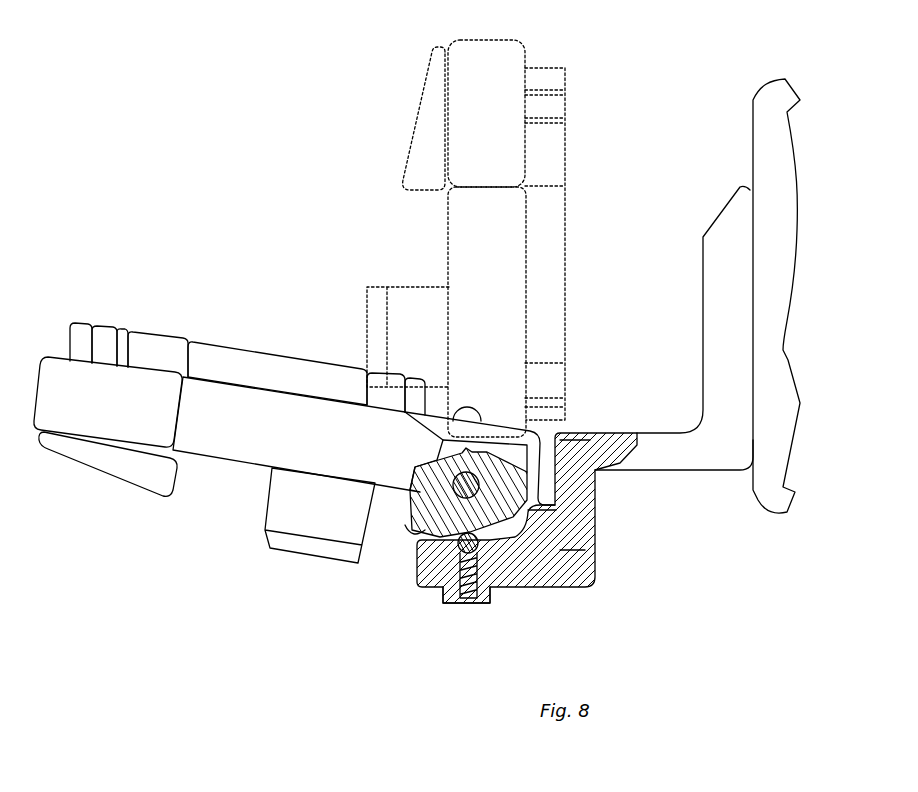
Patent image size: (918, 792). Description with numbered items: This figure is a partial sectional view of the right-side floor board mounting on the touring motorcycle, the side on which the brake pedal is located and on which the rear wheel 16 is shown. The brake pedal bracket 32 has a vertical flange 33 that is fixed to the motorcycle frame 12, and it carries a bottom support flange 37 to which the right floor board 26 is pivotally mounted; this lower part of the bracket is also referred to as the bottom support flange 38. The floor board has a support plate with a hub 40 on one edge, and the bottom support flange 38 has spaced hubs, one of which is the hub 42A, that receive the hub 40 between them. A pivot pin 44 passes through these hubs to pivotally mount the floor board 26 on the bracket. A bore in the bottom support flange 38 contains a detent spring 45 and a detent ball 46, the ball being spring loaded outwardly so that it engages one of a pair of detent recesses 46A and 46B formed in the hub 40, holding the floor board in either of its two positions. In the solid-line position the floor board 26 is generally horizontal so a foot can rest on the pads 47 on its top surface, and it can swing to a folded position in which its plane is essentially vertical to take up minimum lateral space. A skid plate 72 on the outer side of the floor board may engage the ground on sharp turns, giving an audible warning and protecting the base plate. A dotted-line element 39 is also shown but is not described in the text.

The frame 12 is at (766, 110).
The vertical flange 33 is at (723, 277).
The brake pedal bracket 32 is at (705, 470).
The ball joint assembly (phantom) 39 is at (482, 252).
The right floor board 26 is at (75, 388).
The pads 47 is at (270, 362).
The skid plate 72 is at (108, 462).
The bottom support flange 37 is at (230, 452).
The rear wheel 16 is at (280, 537).
The pivot pin 44 is at (430, 460).
The detent recess 46A is at (417, 525).
The detent ball 46 is at (443, 585).
The detent spring 45 is at (500, 583).
The detent recess 46B is at (570, 487).
The hub 40 is at (570, 508).
The spaced hub 42A is at (570, 563).
The bottom support flange 38 is at (585, 562).